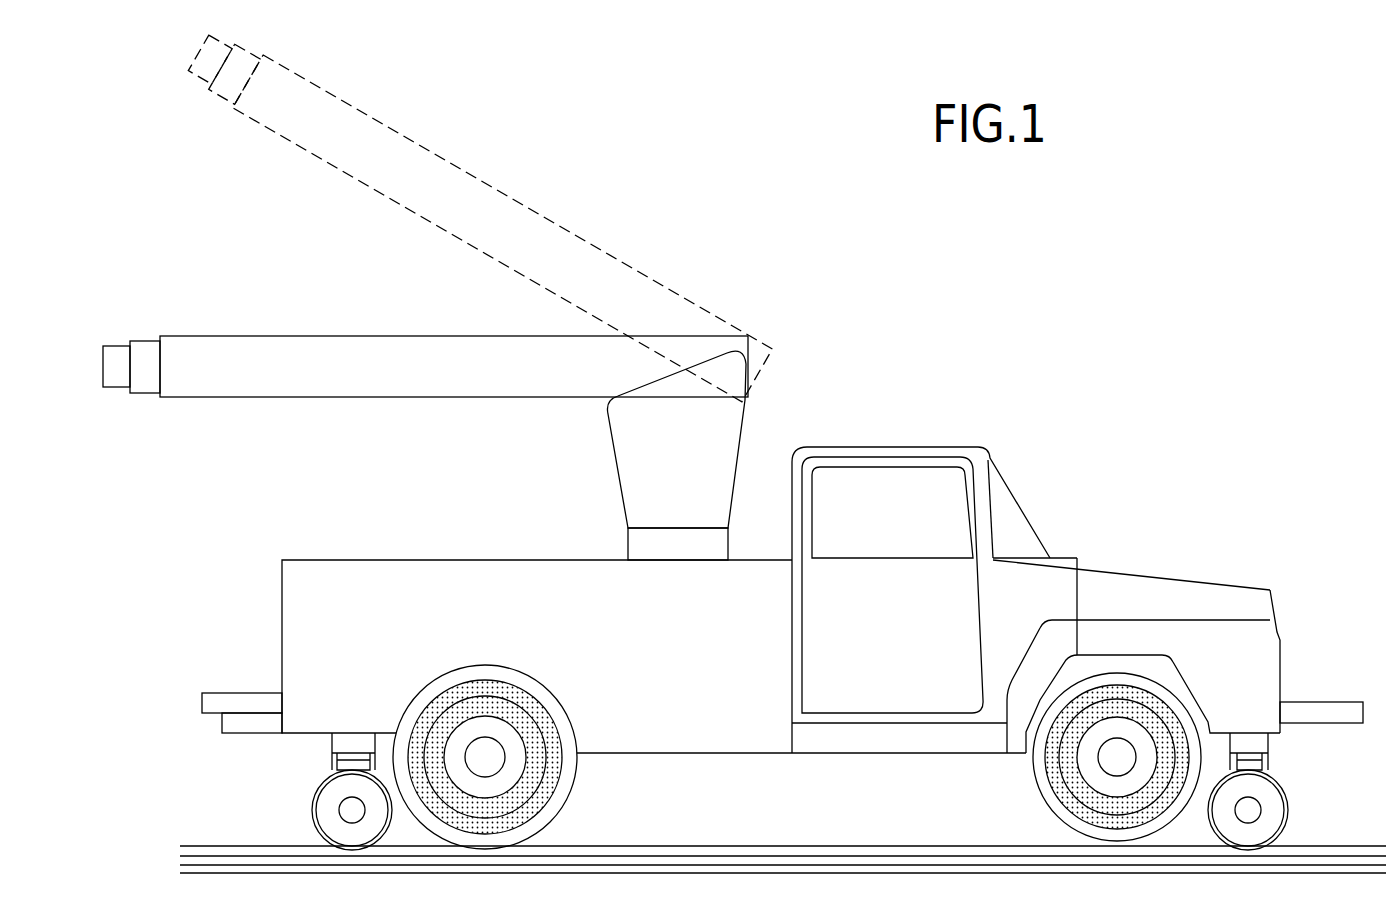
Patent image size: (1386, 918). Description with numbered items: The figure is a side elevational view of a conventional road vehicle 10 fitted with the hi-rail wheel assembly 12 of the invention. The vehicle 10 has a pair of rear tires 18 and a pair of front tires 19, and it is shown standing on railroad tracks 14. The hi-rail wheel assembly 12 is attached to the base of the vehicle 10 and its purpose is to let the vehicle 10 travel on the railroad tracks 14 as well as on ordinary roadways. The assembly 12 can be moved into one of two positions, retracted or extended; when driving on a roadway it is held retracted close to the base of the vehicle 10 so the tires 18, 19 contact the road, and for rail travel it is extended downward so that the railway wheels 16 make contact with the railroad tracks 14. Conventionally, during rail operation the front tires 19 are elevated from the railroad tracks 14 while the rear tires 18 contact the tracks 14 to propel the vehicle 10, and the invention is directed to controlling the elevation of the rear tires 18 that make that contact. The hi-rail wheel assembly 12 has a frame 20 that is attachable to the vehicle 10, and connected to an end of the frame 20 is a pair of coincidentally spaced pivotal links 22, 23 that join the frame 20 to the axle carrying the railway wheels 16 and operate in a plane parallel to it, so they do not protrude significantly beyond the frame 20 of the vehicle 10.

The road vehicle 10 is at (996, 429).
The hi-rail wheel assembly 12 is at (730, 740).
The railroad tracks 14 is at (797, 850).
The railway wheels 16 is at (335, 798).
The rear tires 18 is at (553, 803).
The front tires 19 is at (1060, 805).
The frame 20 is at (355, 747).
The pivotal link 22 is at (333, 768).
The pivotal link 23 is at (370, 768).